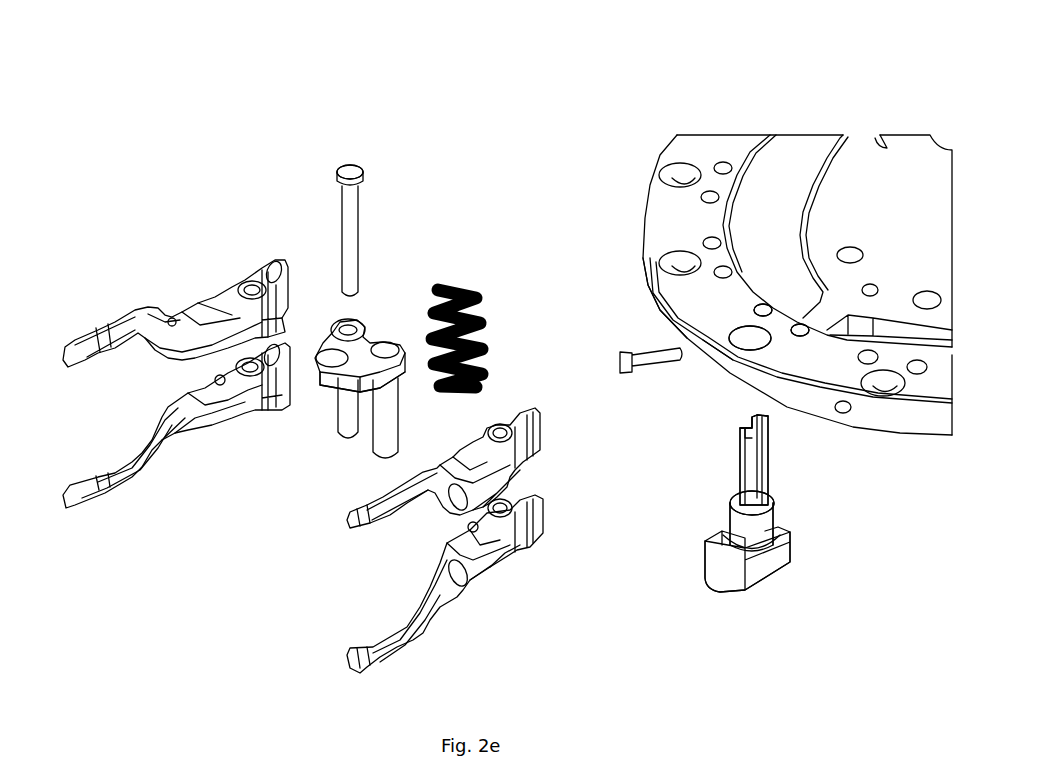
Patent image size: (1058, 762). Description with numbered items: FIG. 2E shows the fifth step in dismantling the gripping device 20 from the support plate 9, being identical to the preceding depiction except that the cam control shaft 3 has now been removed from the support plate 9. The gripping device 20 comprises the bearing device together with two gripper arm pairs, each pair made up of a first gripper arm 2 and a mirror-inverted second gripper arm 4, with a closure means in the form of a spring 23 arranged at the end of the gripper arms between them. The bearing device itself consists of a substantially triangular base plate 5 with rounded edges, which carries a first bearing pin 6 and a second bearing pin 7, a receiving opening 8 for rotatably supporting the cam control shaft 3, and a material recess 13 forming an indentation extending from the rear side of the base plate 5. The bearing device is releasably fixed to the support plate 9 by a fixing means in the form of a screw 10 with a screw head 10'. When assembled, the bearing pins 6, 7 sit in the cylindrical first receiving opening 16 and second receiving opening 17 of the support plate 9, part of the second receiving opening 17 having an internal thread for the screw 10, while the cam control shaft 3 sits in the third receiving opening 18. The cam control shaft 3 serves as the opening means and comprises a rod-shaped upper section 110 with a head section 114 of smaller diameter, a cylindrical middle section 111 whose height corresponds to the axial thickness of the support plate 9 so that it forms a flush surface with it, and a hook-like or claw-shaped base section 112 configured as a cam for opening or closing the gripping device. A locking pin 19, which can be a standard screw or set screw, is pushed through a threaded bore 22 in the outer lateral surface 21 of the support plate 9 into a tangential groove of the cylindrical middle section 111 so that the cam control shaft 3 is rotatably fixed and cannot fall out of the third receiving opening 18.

The first gripper arm 2 is at (128, 345).
The cam control shaft 3 is at (690, 532).
The second gripper arm 4 is at (386, 530).
The base plate 5 is at (355, 390).
The first bearing pin 6 is at (400, 385).
The second bearing pin 7 is at (333, 385).
The receiving opening 8 is at (320, 337).
The support plate 9 is at (806, 358).
The fixing means 10 is at (400, 192).
The screw head 10' is at (337, 130).
The material recess 13 is at (378, 330).
The first receiving opening 16 is at (806, 326).
The second receiving opening 17 is at (768, 305).
The third receiving opening 18 is at (722, 333).
The locking pin 19 is at (612, 353).
The gripping device 20 is at (225, 608).
The outer lateral surface 21 is at (648, 290).
The bore 22 is at (708, 345).
The spring 23 is at (478, 283).
The rod-shaped upper section 110 is at (740, 475).
The cylindrical middle section 111 is at (780, 522).
The base section 112 is at (712, 600).
The head section 114 is at (738, 433).